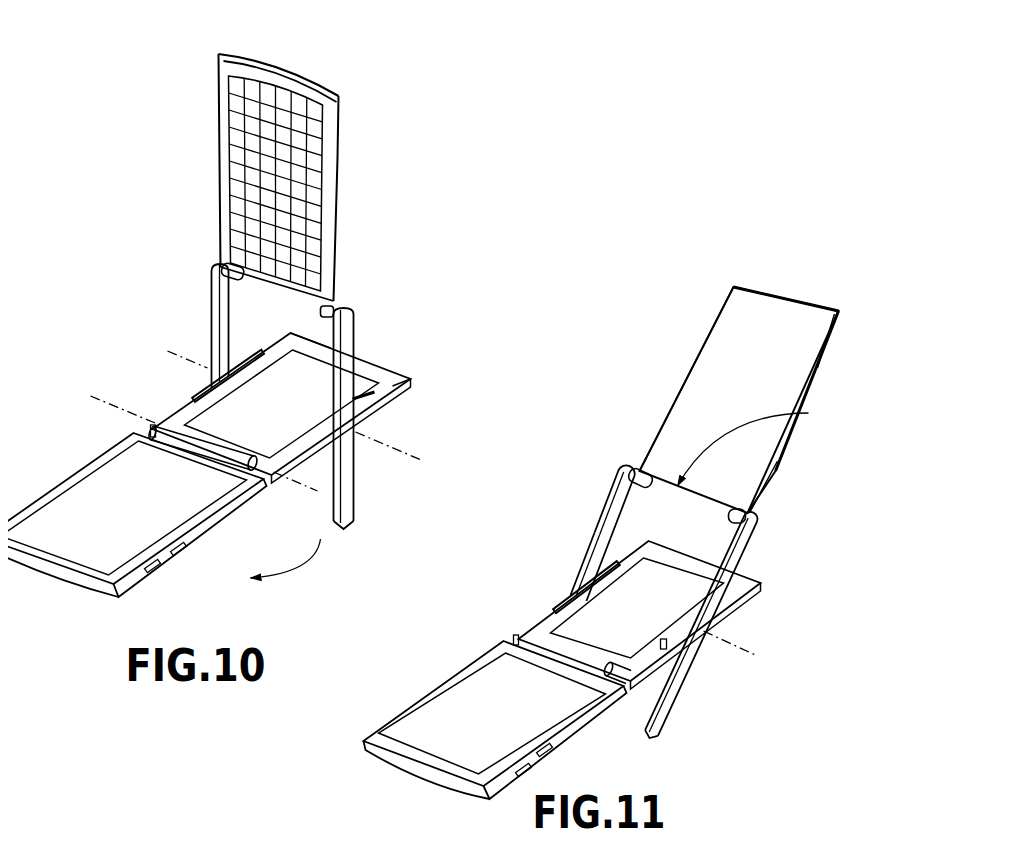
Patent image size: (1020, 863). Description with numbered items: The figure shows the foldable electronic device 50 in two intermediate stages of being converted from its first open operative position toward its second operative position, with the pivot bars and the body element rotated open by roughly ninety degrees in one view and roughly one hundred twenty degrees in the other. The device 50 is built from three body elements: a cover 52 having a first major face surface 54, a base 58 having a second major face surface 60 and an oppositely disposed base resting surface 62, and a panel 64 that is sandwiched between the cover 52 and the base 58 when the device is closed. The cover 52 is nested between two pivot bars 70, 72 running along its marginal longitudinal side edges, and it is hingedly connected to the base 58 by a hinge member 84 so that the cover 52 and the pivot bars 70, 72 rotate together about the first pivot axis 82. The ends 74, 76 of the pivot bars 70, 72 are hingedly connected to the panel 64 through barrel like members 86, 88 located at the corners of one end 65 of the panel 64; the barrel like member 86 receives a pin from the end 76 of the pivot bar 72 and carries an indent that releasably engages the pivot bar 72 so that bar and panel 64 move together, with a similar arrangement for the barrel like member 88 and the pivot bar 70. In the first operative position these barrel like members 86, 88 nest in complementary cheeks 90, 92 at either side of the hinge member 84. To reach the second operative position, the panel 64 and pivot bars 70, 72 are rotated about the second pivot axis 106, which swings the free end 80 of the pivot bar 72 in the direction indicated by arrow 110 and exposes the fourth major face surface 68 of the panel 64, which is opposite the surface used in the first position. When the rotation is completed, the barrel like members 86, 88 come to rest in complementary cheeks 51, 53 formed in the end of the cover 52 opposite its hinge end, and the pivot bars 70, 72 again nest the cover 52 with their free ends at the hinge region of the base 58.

In FIG. 11, the electronic device 50 is at (555, 858).
In FIG. 10, the cheek 51 is at (407, 373).
In FIG. 10, the cover 52 is at (387, 345).
In FIG. 11, the cover 52 is at (760, 603).
In FIG. 10, the cheek 53 is at (302, 338).
In FIG. 10, the first major face surface 54 is at (212, 420).
In FIG. 11, the first major face surface 54 is at (583, 623).
In FIG. 10, the base 58 is at (79, 584).
In FIG. 11, the base 58 is at (443, 785).
In FIG. 10, the second major face surface 60 is at (80, 543).
In FIG. 11, the second major face surface 60 is at (443, 733).
In FIG. 10, the base resting surface 62 is at (180, 560).
In FIG. 11, the base resting surface 62 is at (534, 759).
In FIG. 10, the panel 64 is at (263, 52).
In FIG. 11, the panel 64 is at (783, 290).
In FIG. 11, the end of the panel 65 is at (761, 443).
In FIG. 10, the fourth major face surface 68 is at (240, 168).
In FIG. 11, the fourth major face surface 68 is at (730, 313).
In FIG. 11, the pivot bar 70 is at (600, 517).
In FIG. 10, the pivot bar 72 is at (357, 490).
In FIG. 11, the pivot bar 72 is at (752, 562).
In FIG. 10, the end of the pivot bar 74 is at (220, 260).
In FIG. 11, the end of the pivot bar 74 is at (618, 470).
In FIG. 10, the end of the pivot bar 76 is at (353, 308).
In FIG. 11, the end of the pivot bar 76 is at (763, 523).
In FIG. 10, the end of the pivot bar 80 is at (357, 537).
In FIG. 11, the end of the pivot bar 80 is at (660, 740).
In FIG. 10, the first pivot axis 82 is at (102, 405).
In FIG. 11, the hinge member 84 is at (517, 634).
In FIG. 10, the barrel like member 86 is at (330, 303).
In FIG. 11, the barrel like member 86 is at (727, 517).
In FIG. 10, the barrel like member 88 is at (226, 279).
In FIG. 11, the barrel like member 88 is at (633, 467).
In FIG. 11, the cheek 90 is at (627, 677).
In FIG. 11, the cheek 92 is at (515, 640).
In FIG. 10, the second pivot axis 106 is at (380, 440).
In FIG. 11, the second pivot axis 106 is at (740, 647).
In FIG. 10, the arrow 110 is at (301, 565).